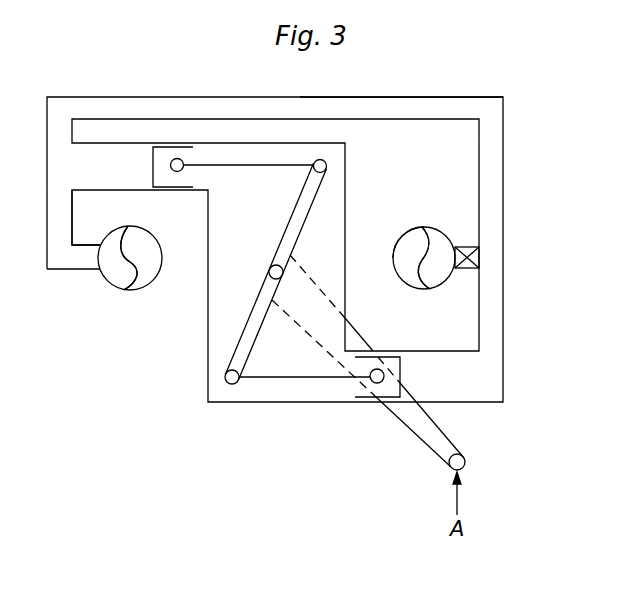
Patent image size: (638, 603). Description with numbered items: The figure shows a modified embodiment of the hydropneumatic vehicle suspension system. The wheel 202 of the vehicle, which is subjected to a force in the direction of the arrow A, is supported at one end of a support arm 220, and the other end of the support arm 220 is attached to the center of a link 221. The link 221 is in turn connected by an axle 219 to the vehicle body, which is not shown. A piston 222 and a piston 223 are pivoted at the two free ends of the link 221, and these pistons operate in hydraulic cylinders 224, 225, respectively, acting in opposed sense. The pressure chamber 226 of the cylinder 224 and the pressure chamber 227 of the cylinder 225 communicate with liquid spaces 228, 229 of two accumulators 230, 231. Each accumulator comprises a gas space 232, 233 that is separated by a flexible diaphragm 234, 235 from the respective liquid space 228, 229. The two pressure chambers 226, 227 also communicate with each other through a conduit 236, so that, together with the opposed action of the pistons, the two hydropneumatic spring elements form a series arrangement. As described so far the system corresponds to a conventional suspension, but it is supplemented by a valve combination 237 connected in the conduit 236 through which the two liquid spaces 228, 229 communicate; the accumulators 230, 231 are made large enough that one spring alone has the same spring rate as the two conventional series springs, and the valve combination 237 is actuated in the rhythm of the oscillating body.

The wheel 202 is at (466, 462).
The axle 219 is at (268, 272).
The support arm 220 is at (424, 445).
The link 221 is at (298, 218).
The piston 222 is at (194, 146).
The piston 223 is at (361, 403).
The hydraulic cylinder 224 is at (112, 143).
The hydraulic cylinder 225 is at (483, 403).
The pressure chamber 226 is at (115, 184).
The pressure chamber 227 is at (465, 390).
The liquid space 228 is at (114, 244).
The liquid space 229 is at (435, 243).
The accumulator 230 is at (157, 282).
The accumulator 231 is at (403, 230).
The gas space 232 is at (143, 245).
The gas space 233 is at (407, 258).
The flexible diaphragm 234 is at (121, 281).
The flexible diaphragm 235 is at (425, 281).
The conduit 236 is at (431, 110).
The valve combination 237 is at (458, 246).